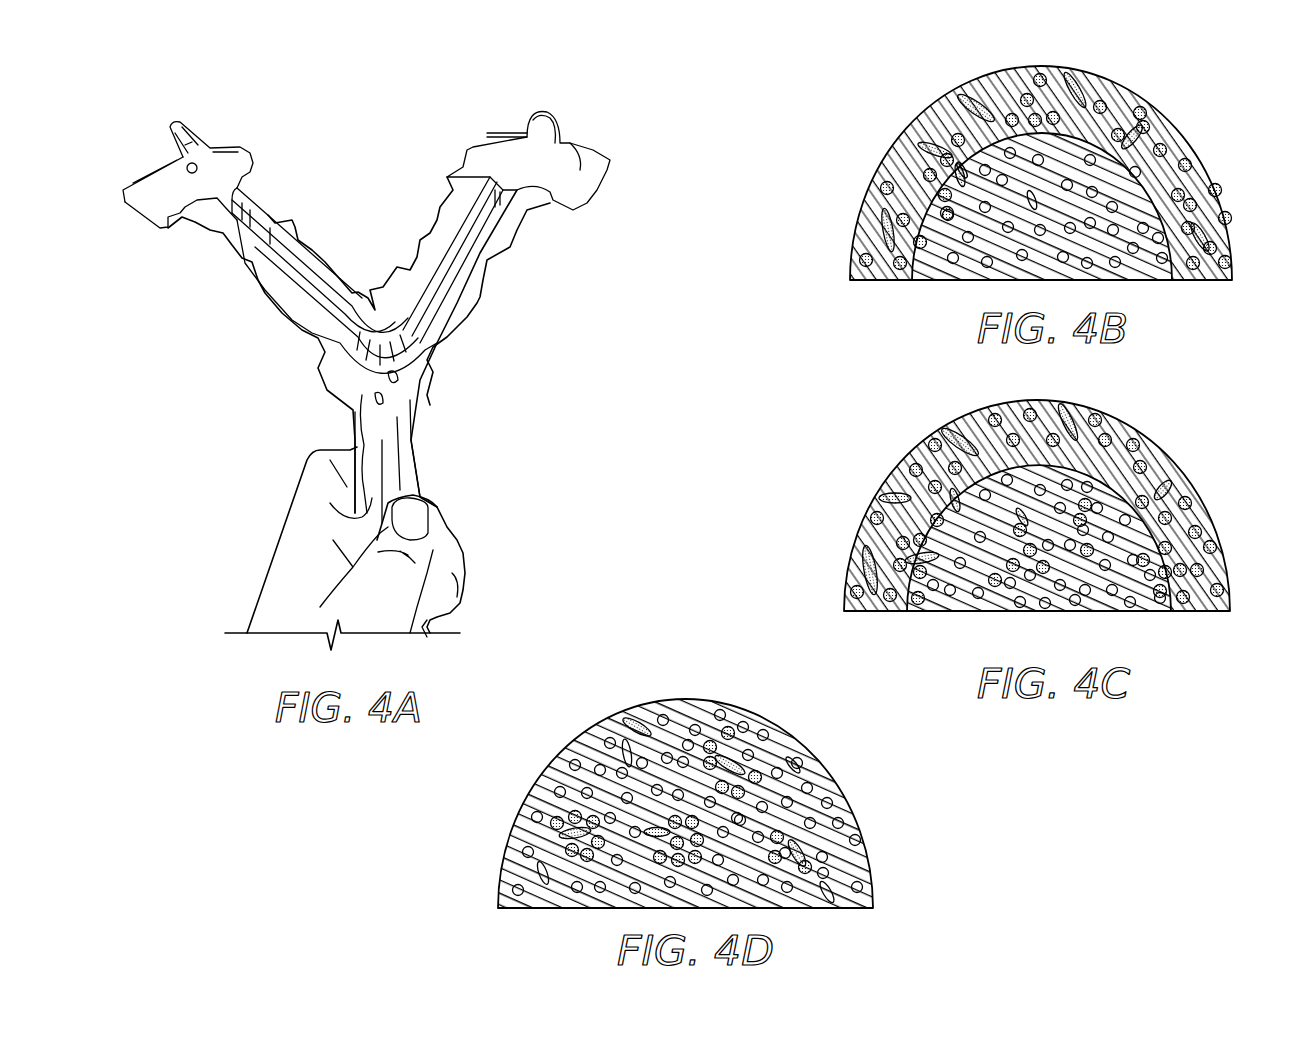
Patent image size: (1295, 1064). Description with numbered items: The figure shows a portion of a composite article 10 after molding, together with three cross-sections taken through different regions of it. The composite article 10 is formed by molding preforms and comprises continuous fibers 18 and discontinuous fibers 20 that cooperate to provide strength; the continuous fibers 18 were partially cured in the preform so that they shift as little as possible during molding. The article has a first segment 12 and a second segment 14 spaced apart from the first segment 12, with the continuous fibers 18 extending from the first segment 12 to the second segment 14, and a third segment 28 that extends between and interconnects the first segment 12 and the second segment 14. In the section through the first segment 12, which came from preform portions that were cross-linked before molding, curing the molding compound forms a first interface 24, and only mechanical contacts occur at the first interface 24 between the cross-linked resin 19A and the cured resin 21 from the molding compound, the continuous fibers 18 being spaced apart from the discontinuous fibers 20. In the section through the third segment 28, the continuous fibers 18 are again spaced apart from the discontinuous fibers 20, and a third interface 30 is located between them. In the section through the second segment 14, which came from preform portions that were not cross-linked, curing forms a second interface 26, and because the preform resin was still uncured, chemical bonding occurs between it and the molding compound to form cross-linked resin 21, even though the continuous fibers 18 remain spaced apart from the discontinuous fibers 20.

In FIG. 4A, the composite article 10 is at (222, 96).
In FIG. 4A, the first segment 12 is at (140, 208).
In FIG. 4B, the first segment 12 is at (900, 105).
In FIG. 4A, the second segment 14 is at (405, 476).
In FIG. 4D, the second segment 14 is at (877, 808).
In FIG. 4B, the continuous fibers 18 is at (1150, 120).
In FIG. 4C, the continuous fibers 18 is at (1147, 474).
In FIG. 4D, the continuous fibers 18 is at (540, 843).
In FIG. 4B, the cross-linked resin 19A is at (982, 86).
In FIG. 4C, the cross-linked resin 19A is at (973, 418).
In FIG. 4B, the discontinuous fibers 20 is at (1117, 181).
In FIG. 4C, the discontinuous fibers 20 is at (1120, 600).
In FIG. 4D, the discontinuous fibers 20 is at (717, 703).
In FIG. 4B, the cured resin 21 is at (945, 270).
In FIG. 4C, the cured resin 21 is at (992, 600).
In FIG. 4D, the cured resin 21 is at (768, 720).
In FIG. 4B, the first interface 24 is at (1093, 128).
In FIG. 4D, the second interface 26 is at (773, 789).
In FIG. 4A, the third segment 28 is at (438, 380).
In FIG. 4C, the third segment 28 is at (893, 436).
In FIG. 4C, the third interface 30 is at (1058, 476).